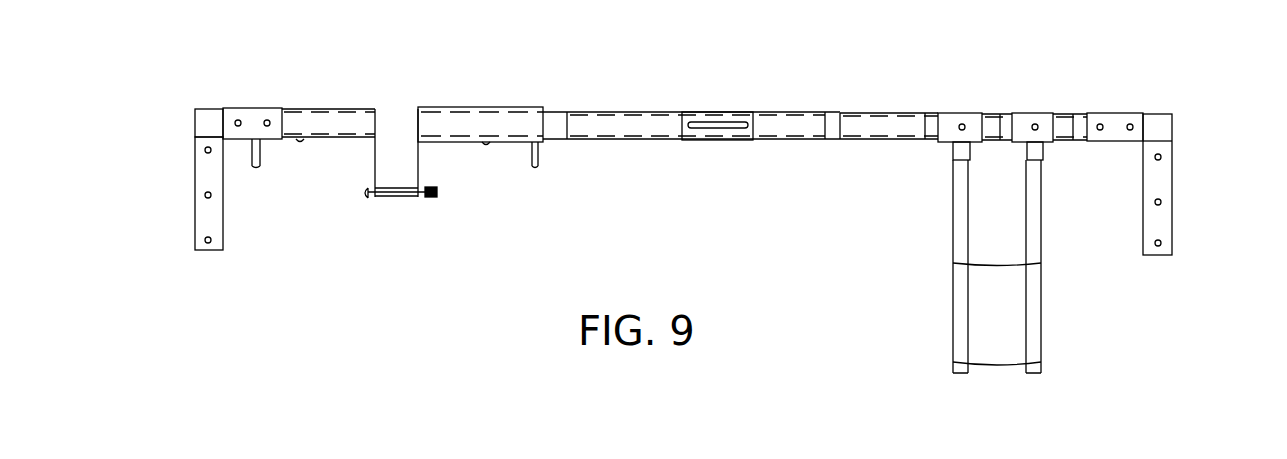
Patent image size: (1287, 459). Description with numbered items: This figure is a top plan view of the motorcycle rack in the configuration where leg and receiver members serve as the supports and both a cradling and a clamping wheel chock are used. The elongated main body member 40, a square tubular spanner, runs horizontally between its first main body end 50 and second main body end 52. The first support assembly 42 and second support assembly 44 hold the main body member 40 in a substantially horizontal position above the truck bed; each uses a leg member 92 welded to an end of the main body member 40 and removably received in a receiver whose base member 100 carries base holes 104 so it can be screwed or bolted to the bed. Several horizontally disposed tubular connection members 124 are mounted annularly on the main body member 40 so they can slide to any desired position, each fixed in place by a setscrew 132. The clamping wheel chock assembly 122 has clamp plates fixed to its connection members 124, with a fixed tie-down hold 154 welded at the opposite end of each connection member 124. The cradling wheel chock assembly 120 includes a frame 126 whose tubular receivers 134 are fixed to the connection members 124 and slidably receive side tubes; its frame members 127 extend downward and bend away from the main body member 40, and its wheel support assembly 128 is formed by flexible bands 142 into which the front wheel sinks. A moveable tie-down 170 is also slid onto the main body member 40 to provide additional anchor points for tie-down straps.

The main body member 40 is at (608, 120).
The first support assembly 42 is at (186, 210).
The second support assembly 44 is at (1186, 157).
The first main body end 50 is at (236, 104).
The second main body end 52 is at (1118, 107).
The leg member 92 is at (208, 118).
The base member 100 is at (213, 219).
The base hole 104 is at (202, 240).
The cradling wheel chock assembly 120 is at (990, 290).
The clamping wheel chock assembly 122 is at (429, 226).
The tubular connection member 124 is at (475, 118).
The frame 126 is at (950, 220).
The frame member 127 is at (1041, 228).
The wheel support assembly 128 is at (1001, 340).
The setscrew 132 is at (1033, 118).
The tubular receiver 134 is at (950, 151).
The flexible band 142 is at (980, 313).
The fixed tie-down hold 154 is at (545, 168).
The moveable tie-down 170 is at (718, 106).